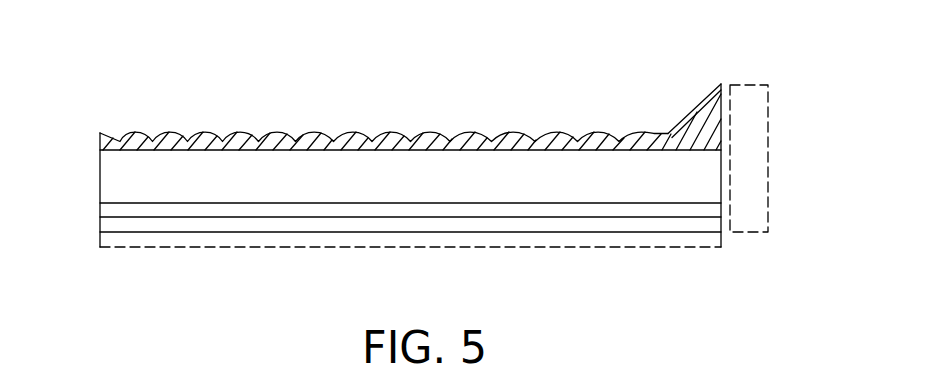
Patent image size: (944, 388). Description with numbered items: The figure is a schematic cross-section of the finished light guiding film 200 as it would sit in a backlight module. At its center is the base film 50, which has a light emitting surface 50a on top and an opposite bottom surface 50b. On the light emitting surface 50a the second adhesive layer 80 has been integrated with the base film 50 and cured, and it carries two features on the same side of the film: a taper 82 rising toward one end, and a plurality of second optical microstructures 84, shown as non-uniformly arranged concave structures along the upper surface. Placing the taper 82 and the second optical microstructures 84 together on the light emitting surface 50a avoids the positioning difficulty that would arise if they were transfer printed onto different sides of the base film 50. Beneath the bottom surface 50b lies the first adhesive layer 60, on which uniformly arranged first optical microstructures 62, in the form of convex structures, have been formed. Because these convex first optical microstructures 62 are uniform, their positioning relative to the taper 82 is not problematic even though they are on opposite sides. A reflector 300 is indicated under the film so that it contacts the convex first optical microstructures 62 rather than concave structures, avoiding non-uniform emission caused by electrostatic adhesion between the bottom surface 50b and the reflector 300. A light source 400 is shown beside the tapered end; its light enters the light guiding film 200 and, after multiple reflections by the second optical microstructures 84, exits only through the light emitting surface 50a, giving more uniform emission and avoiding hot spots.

The base film 50 is at (383, 176).
The light emitting surface 50a is at (432, 149).
The bottom surface 50b is at (435, 203).
The first adhesive layer 60 is at (107, 210).
The first optical microstructures 62 is at (104, 223).
The second adhesive layer 80 is at (409, 94).
The taper 82 is at (705, 113).
The second optical microstructures 84 is at (533, 143).
The light guiding film 200 is at (813, 322).
The reflector 300 is at (635, 250).
The light source 400 is at (757, 83).